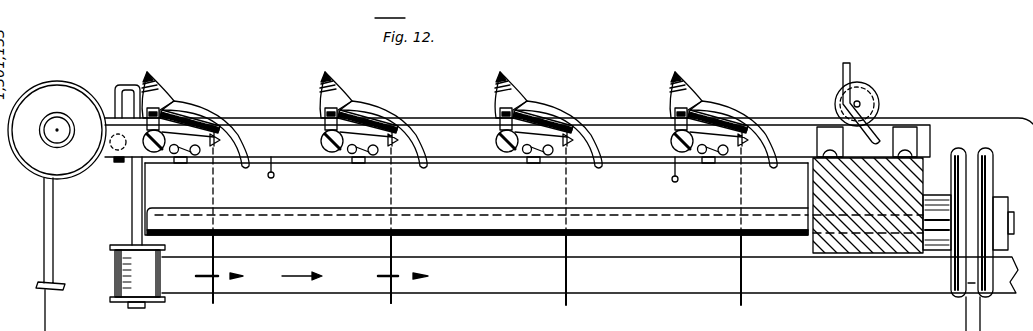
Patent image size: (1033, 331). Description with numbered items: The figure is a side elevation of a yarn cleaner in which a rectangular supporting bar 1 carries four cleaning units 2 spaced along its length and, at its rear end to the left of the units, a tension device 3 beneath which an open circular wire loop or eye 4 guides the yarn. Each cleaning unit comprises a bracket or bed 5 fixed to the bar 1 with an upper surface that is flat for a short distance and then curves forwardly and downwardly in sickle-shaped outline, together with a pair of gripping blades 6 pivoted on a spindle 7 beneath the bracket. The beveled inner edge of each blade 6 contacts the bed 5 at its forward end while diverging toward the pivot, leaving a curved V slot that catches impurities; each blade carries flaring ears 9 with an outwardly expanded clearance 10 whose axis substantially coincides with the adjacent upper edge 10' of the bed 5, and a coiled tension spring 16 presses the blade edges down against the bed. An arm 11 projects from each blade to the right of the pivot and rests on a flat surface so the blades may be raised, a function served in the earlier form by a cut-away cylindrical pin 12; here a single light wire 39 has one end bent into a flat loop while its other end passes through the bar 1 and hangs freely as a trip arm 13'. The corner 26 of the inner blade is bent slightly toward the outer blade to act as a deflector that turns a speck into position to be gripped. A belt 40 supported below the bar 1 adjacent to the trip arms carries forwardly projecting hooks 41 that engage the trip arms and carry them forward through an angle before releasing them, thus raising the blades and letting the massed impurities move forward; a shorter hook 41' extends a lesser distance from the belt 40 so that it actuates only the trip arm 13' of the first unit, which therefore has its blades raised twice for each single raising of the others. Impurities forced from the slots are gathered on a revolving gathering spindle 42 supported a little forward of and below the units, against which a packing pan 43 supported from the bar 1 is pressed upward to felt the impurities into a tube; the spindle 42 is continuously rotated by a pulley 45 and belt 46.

The supporting bar 1 is at (569, 140).
The cleaning unit 2 is at (200, 108).
The tension device 3 is at (57, 130).
The wire loop or eye 4 is at (62, 287).
The bracket or bed 5 is at (368, 127).
The gripping blade 6 is at (361, 104).
The spindle 7 is at (333, 151).
The ears 9 is at (152, 79).
The clearance 10 is at (491, 111).
The upper edge of bed 10' is at (166, 146).
The arm 11 is at (556, 135).
The cylindrical pin 12 is at (217, 151).
The trip arm 13' is at (232, 269).
The coiled tension spring 16 is at (366, 158).
The corner of inner blade 26 is at (692, 114).
The light wire 39 is at (389, 248).
The belt 40 is at (663, 289).
The hook 41 is at (200, 296).
The hook 41' is at (374, 296).
The gathering spindle 42 is at (472, 213).
The packing pan 43 is at (476, 199).
The pulley 45 is at (985, 178).
The belt 46 is at (978, 321).